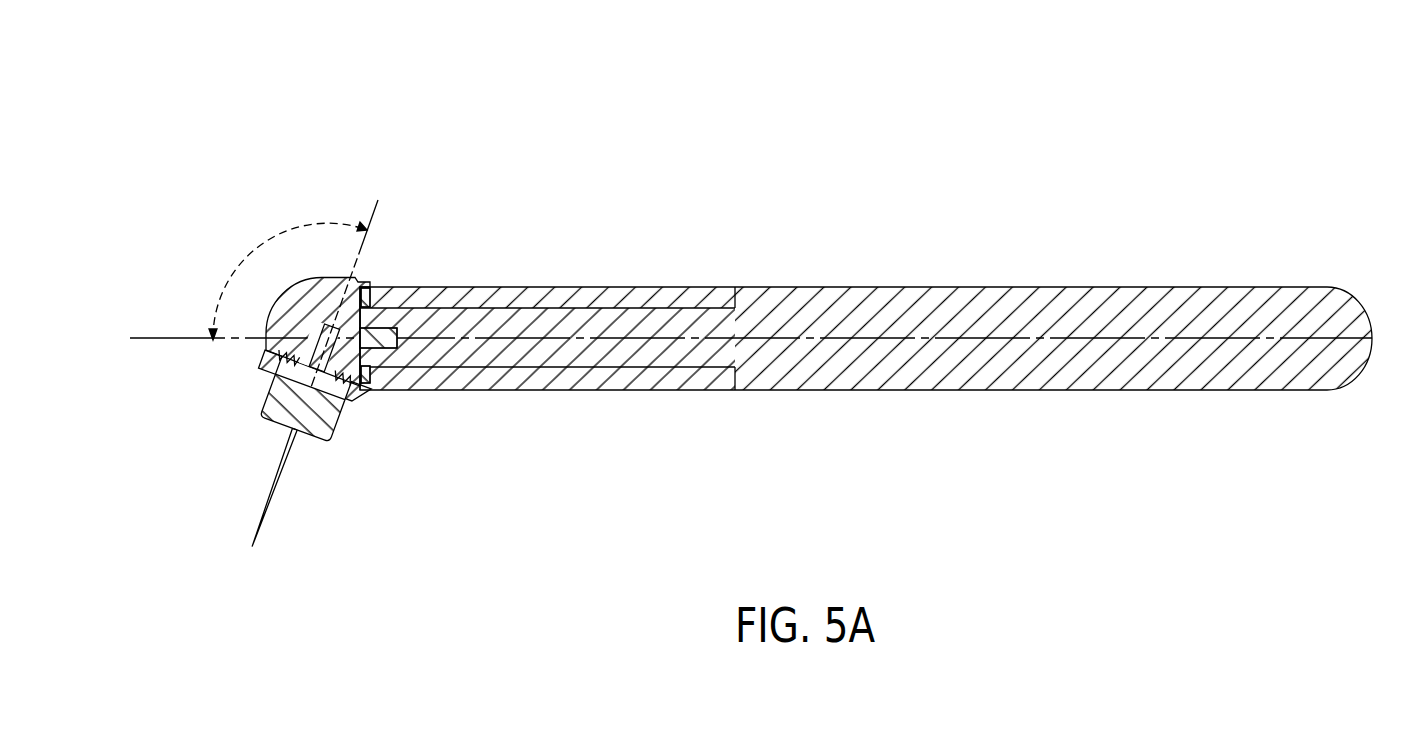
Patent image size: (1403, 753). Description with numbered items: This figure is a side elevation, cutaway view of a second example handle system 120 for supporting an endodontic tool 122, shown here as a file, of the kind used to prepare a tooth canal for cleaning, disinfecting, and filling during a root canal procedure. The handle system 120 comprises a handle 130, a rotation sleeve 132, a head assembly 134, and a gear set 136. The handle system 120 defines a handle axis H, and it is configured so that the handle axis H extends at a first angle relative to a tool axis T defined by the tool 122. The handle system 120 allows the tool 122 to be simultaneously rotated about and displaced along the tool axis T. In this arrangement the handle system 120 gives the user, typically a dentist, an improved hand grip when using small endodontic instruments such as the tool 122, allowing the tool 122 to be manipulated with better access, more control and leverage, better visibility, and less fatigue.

The handle system 120 is at (1163, 138).
The endodontic tool 122 is at (274, 477).
The handle 130 is at (909, 242).
The rotation sleeve 132 is at (614, 290).
The head assembly 134 is at (257, 379).
The gear set 136 is at (348, 429).
The handle axis H is at (1186, 338).
The tool axis T is at (378, 218).